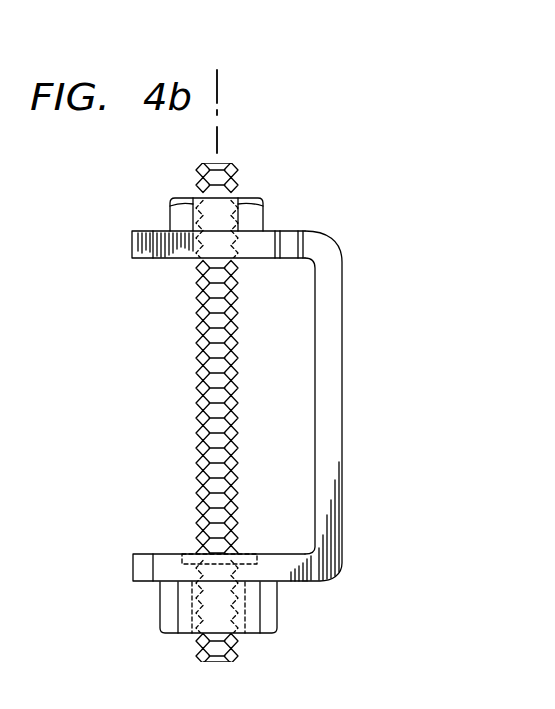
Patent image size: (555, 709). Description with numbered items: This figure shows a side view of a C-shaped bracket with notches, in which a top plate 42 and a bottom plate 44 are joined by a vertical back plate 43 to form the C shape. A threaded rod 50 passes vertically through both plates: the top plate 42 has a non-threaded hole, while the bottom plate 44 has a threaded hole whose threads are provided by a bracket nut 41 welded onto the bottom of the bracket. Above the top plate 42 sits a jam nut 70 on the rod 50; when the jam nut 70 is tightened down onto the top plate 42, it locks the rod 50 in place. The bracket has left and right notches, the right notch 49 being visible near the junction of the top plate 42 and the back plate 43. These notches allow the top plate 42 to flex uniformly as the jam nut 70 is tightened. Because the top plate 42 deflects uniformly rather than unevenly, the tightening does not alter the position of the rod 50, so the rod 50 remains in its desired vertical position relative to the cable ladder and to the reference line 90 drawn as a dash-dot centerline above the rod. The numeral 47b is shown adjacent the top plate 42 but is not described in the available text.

The reference line 90 is at (218, 91).
The jam nut 70 is at (254, 205).
The top plate 42 is at (147, 230).
The right notch 49 is at (289, 240).
The aperture in upper arm 47b is at (267, 250).
The rod 50 is at (200, 382).
The back plate 43 is at (343, 386).
The bottom plate 44 is at (293, 583).
The bracket nut 41 is at (162, 611).